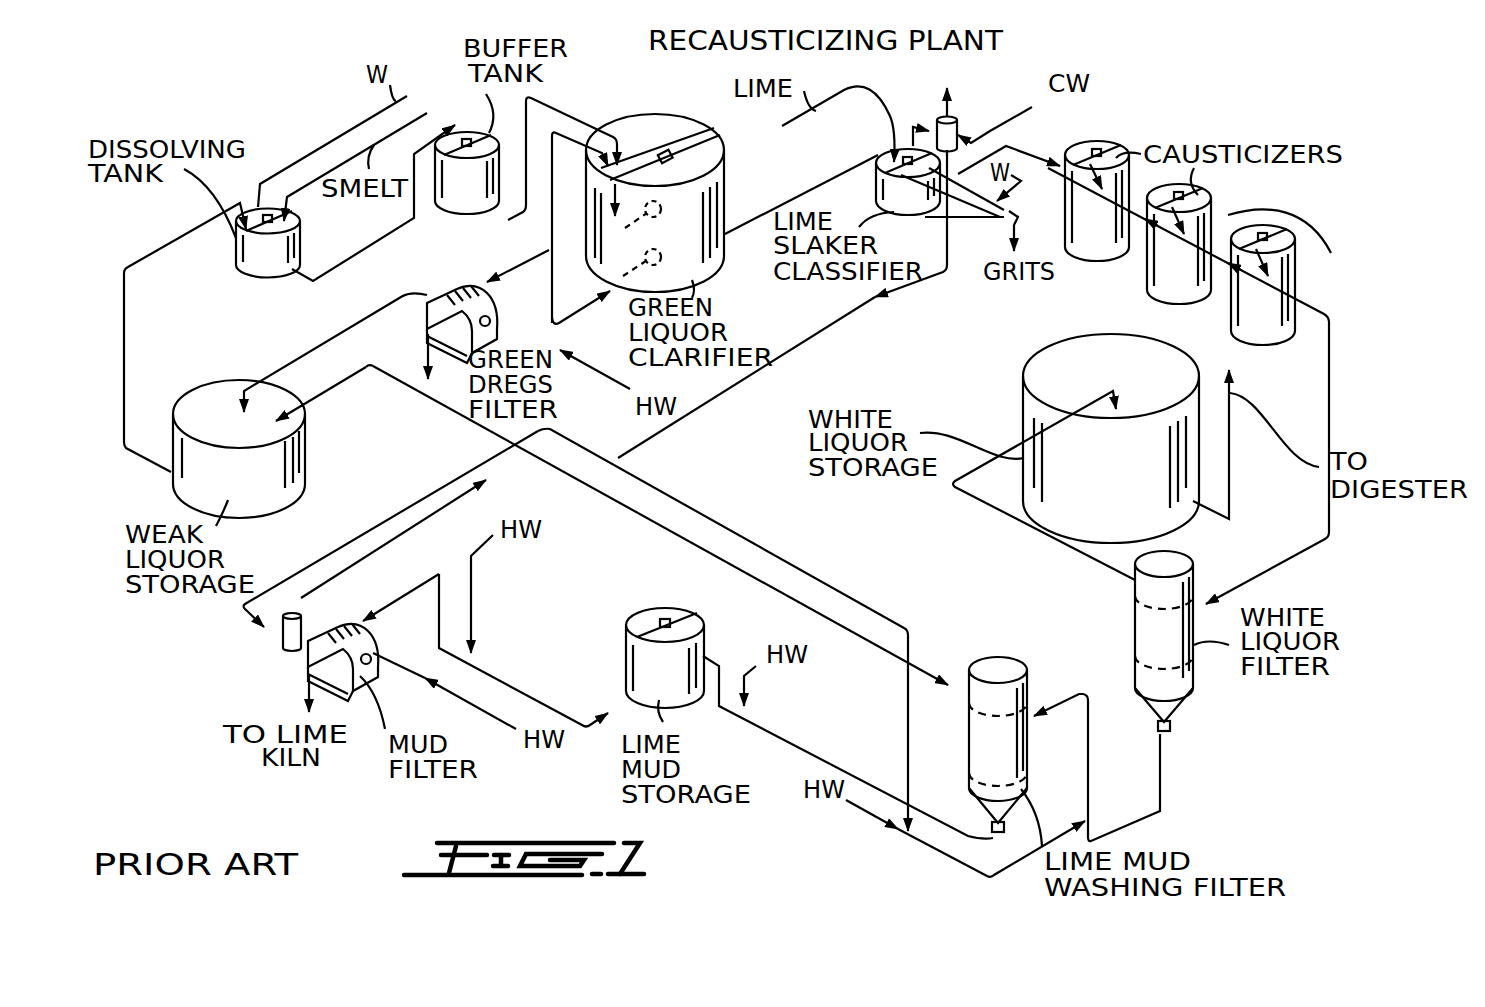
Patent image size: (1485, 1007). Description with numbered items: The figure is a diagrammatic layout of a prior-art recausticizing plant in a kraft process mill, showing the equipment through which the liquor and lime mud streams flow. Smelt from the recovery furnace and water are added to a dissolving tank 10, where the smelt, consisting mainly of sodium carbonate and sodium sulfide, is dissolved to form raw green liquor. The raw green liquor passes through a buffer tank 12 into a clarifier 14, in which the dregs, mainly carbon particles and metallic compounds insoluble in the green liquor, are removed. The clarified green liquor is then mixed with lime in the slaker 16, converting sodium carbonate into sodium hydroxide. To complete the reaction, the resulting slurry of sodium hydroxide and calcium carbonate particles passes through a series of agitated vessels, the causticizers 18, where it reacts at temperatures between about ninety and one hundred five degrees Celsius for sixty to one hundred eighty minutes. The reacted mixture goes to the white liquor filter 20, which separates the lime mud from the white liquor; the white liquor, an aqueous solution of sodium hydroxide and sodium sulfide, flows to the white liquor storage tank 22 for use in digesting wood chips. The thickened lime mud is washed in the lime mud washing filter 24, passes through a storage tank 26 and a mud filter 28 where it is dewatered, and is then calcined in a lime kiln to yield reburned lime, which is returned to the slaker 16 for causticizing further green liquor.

The dissolving tank 10 is at (238, 258).
The buffer tank 12 is at (449, 186).
The clarifier 14 is at (716, 194).
The slaker 16 is at (866, 177).
The causticizers 18 is at (1298, 256).
The white liquor filter 20 is at (1128, 637).
The white liquor storage tank 22 is at (1019, 385).
The lime mud washing filter 24 is at (963, 729).
The storage tank 26 is at (608, 645).
The mud filter 28 is at (331, 609).